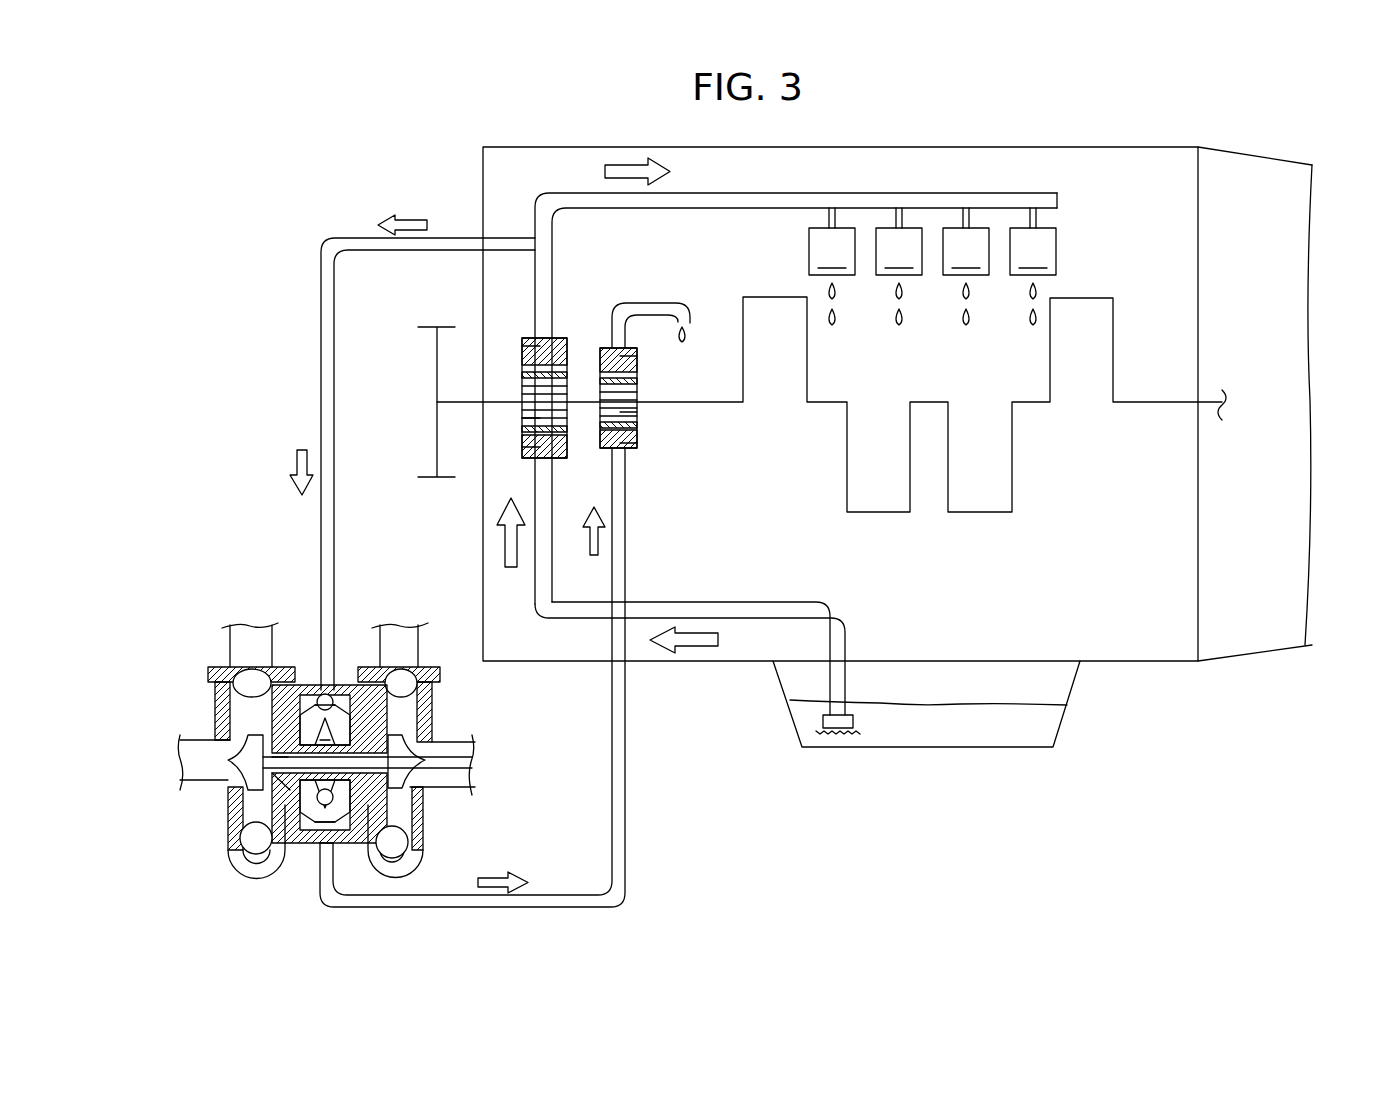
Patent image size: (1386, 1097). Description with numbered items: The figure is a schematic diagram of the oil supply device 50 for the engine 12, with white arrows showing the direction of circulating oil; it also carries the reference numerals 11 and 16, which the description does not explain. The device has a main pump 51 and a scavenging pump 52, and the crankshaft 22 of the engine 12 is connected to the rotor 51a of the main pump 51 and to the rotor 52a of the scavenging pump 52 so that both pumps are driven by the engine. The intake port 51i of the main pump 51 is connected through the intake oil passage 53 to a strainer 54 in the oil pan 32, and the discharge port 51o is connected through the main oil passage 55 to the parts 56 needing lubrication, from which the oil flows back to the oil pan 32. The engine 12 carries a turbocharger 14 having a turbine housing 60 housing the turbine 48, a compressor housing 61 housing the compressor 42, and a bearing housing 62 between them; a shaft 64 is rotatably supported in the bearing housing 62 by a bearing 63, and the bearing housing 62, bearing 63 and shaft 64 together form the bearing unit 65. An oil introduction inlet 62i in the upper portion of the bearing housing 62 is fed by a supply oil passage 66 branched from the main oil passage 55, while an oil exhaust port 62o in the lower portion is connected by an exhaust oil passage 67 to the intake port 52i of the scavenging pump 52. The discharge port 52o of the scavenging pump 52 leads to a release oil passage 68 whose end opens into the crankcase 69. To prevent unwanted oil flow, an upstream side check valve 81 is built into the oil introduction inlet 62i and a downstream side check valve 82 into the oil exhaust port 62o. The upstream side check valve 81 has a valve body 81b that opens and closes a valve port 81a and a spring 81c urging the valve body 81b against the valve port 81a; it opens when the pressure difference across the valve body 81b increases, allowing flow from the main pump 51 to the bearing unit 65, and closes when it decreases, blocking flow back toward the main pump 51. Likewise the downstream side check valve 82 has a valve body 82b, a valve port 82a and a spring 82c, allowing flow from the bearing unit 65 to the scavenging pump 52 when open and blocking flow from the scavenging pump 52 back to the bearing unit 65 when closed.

The engine 11 is at (1204, 120).
The engine 12 is at (1076, 132).
The turbocharger 14 is at (214, 586).
The engine side portion 16 is at (1283, 225).
The crankshaft 22 is at (834, 392).
The oil pan 32 is at (1083, 692).
The compressor 42 is at (240, 760).
The turbine 48 is at (415, 760).
The oil supply device 50 is at (205, 228).
The main pump 51 is at (524, 336).
The discharge port 51o is at (522, 346).
The rotor 51a is at (522, 418).
The intake port 51i is at (522, 447).
The scavenging pump 52 is at (602, 346).
The discharge port 52o is at (637, 356).
The rotor 52a is at (637, 412).
The intake port 52i is at (637, 443).
The intake oil passage 53 is at (785, 601).
The strainer 54 is at (818, 725).
The main oil passage 55 is at (702, 212).
The parts needing lubrication 56 is at (932, 266).
The turbine housing 60 is at (418, 830).
The compressor housing 61 is at (240, 868).
The bearing housing 62 is at (406, 682).
The oil introduction inlet 62i is at (248, 690).
The oil exhaust port 62o is at (302, 835).
The bearing 63 is at (400, 778).
The shaft 64 is at (270, 775).
The bearing unit 65 is at (285, 805).
The supply oil passage 66 is at (321, 352).
The exhaust oil passage 67 is at (627, 776).
The release oil passage 68 is at (648, 304).
The crankcase 69 is at (1100, 575).
The upstream side check valve 81 is at (370, 730).
The valve port 81a is at (318, 692).
The valve body 81b is at (336, 692).
The spring 81c is at (300, 745).
The downstream side check valve 82 is at (385, 838).
The valve port 82a is at (318, 802).
The valve body 82b is at (348, 845).
The spring 82c is at (313, 872).